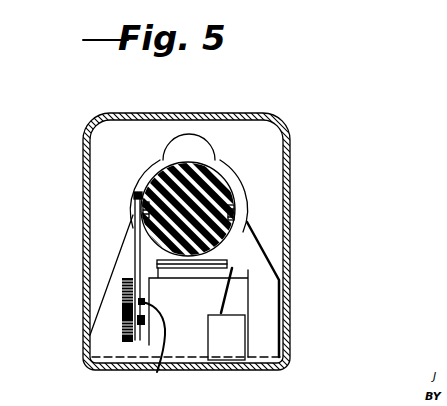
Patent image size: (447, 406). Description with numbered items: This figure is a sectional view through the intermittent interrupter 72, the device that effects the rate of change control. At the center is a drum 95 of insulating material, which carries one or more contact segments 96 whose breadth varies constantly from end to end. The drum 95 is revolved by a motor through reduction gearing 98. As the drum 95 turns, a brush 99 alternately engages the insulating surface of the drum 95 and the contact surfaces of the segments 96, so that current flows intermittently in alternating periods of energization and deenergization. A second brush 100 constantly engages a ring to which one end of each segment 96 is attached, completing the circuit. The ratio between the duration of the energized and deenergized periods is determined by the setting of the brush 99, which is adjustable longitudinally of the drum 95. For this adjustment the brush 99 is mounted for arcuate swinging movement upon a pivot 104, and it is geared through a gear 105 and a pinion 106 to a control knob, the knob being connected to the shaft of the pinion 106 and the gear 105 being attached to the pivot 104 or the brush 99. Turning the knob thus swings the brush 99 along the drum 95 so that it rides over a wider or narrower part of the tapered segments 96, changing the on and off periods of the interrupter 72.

The intermittent interrupter 72 is at (169, 157).
The drum 95 is at (145, 178).
The contact segments 96 is at (234, 213).
The reduction gearing 98 is at (229, 170).
The brush 99 is at (135, 221).
The brush 100 is at (210, 261).
The pivot 104 is at (157, 372).
The gear 105 is at (122, 291).
The pinion 106 is at (122, 332).